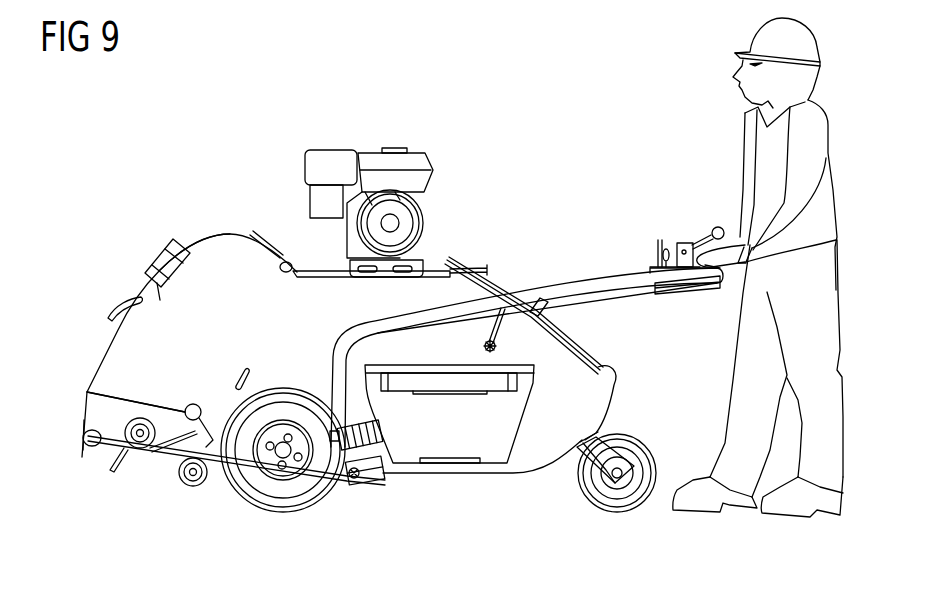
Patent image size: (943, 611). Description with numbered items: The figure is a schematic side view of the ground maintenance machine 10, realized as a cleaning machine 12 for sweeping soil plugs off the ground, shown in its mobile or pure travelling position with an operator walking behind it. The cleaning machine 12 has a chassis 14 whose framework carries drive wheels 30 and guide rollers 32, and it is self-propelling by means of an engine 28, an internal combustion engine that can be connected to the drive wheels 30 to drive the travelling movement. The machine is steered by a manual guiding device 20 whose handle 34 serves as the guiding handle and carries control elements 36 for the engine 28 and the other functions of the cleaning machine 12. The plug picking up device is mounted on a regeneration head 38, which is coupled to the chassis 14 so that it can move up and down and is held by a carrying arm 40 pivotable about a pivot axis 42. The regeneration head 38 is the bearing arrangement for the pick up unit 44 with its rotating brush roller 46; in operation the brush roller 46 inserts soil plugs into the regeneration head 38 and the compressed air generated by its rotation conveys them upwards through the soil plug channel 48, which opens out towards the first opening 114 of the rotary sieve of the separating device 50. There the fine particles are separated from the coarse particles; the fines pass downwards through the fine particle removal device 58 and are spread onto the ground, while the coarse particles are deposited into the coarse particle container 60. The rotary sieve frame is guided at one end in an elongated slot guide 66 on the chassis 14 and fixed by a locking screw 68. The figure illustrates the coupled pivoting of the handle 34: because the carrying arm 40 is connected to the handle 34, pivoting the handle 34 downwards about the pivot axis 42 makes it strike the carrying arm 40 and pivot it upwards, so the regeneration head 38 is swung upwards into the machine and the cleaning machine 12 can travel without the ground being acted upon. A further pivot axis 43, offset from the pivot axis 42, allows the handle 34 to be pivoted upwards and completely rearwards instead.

The ground maintenance machine 10 is at (498, 143).
The cleaning machine 12 is at (107, 212).
The chassis 14 is at (170, 250).
The manual guiding device 20 is at (597, 274).
The engine 28 is at (367, 163).
The drive wheels 30 is at (280, 503).
The guide rollers 32 is at (650, 452).
The handle 34 is at (623, 280).
The control elements 36 is at (680, 228).
The regeneration head 38 is at (97, 413).
The carrying arm 40 is at (228, 470).
The pivot axis 42 is at (373, 488).
The pivot axis 43 is at (352, 466).
The pick up unit 44 is at (96, 474).
The brush roller 46 is at (116, 476).
The soil plug channel 48 is at (153, 292).
The separating device 50 is at (325, 287).
The fine particle removal device 58 is at (250, 323).
The coarse particle container 60 is at (503, 422).
The elongated slot guide 66 is at (487, 327).
The locking screw 68 is at (502, 346).
The first opening 114 is at (243, 277).